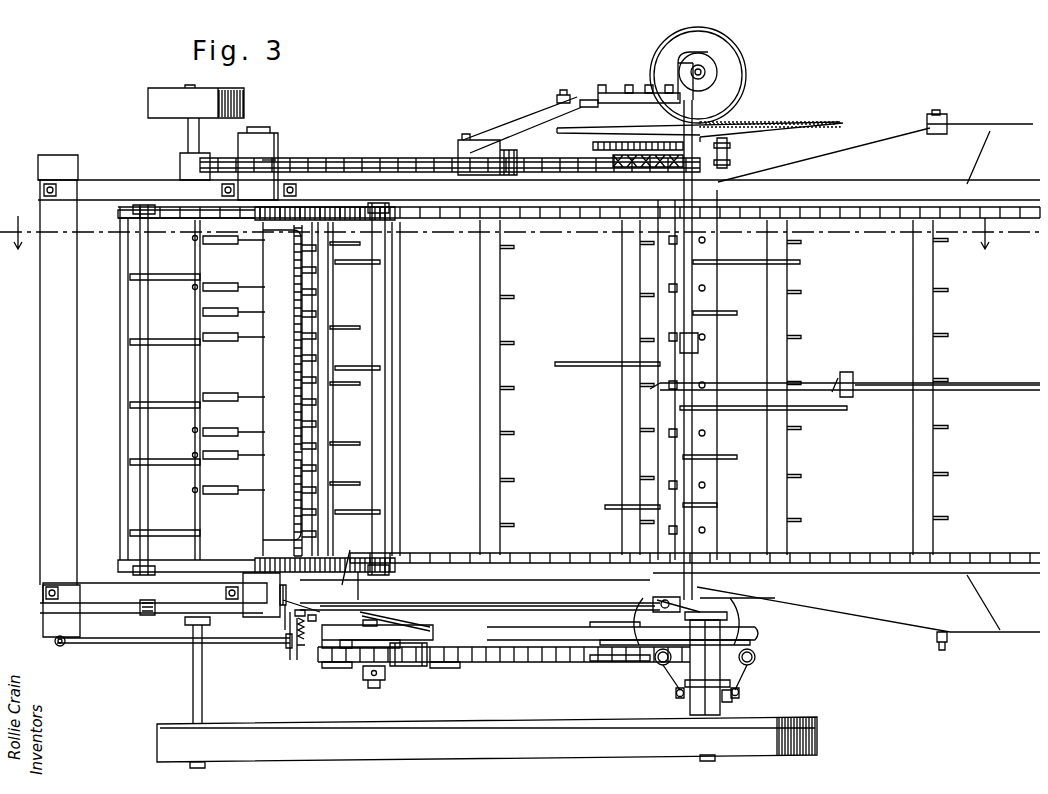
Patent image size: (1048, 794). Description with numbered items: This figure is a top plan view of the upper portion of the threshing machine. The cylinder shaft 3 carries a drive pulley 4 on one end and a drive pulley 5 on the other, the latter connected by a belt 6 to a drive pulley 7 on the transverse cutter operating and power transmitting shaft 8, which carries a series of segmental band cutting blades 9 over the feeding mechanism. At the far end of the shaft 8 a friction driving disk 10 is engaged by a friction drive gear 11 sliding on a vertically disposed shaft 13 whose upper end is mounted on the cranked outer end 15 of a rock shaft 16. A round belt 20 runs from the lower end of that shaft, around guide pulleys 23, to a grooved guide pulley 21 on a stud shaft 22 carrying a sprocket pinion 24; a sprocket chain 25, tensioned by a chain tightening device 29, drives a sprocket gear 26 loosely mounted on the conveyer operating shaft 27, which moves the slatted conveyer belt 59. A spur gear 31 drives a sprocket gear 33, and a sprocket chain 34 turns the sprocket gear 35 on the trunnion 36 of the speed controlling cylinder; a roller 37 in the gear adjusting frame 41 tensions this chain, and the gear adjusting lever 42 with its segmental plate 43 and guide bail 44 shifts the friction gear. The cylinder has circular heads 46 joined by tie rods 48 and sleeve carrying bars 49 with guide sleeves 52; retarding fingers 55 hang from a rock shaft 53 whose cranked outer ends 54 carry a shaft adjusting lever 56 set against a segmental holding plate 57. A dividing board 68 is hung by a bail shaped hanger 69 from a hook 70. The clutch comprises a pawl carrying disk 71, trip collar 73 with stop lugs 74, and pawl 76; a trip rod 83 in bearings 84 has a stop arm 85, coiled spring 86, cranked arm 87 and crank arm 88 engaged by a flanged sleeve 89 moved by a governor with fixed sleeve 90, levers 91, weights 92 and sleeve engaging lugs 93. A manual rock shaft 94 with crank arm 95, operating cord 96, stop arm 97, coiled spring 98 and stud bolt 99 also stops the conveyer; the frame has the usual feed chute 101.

The shaft 3 is at (188, 128).
The drive pulley 4 is at (148, 106).
The drive pulley 5 is at (182, 764).
The belt 6 is at (487, 740).
The drive pulley 7 is at (778, 756).
The cutter operating and power transmitting shaft 8 is at (718, 520).
The segmental band cutting blades 9 is at (798, 262).
The friction driving disk 10 is at (808, 117).
The friction drive gear 11 is at (736, 62).
The vertically disposed shaft 13 is at (704, 74).
The cranked outer end 15 is at (723, 110).
The rock shaft 16 is at (726, 162).
The round belt 20 is at (730, 147).
The grooved guide pulley 21 is at (754, 632).
The stud shaft 22 is at (700, 695).
The guide pulleys 23 is at (772, 600).
The sprocket pinion 24 is at (635, 655).
The sprocket chain 25 is at (540, 662).
The sprocket gear 26 is at (332, 660).
The conveyer operating shaft 27 is at (378, 688).
The chain tightening device 29 is at (404, 660).
The spur gear 31 is at (593, 146).
The sprocket gear 33 is at (623, 170).
The sprocket chain 34 is at (343, 160).
The sprocket gear 35 is at (268, 160).
The trunnion 36 is at (267, 131).
The roller 37 is at (486, 134).
The gear adjusting frame 41 is at (512, 118).
The gear adjusting lever 42 is at (635, 92).
The segmental plate 43 is at (612, 94).
The guide bail 44 is at (574, 96).
The circular heads 46 is at (122, 220).
The tie rods 48 is at (380, 320).
The sleeve carrying bars 49 is at (328, 404).
The guide sleeve 52 is at (210, 242).
The rock shaft 53 is at (292, 390).
The cranked outer ends 54 is at (272, 230).
The retarding fingers 55 is at (424, 370).
The shaft adjusting lever 56 is at (142, 614).
The segmental holding plate 57 is at (148, 620).
The slatted conveyer belt 59 is at (542, 220).
The dividing board 68 is at (968, 382).
The bail shaped hanger 69 is at (820, 382).
The hook 70 is at (660, 382).
The pawl carrying disk 71 is at (300, 650).
The trip collar 73 is at (355, 648).
The stop lugs 74 is at (366, 656).
The pawl 76 is at (342, 662).
The trip rod 83 is at (530, 608).
The bearings 84 is at (363, 607).
The stop arm 85 is at (410, 620).
The coiled spring 86 is at (315, 610).
The cranked arm 87 is at (357, 563).
The crank arm 88 is at (698, 600).
The flanged sleeve 89 is at (753, 655).
The fixed sleeve 90 is at (705, 715).
The levers 91 is at (748, 683).
The balls or weights 92 is at (758, 672).
The sleeve engaging lugs 93 is at (690, 710).
The rock shaft 94 is at (242, 638).
The crank arm 95 is at (300, 628).
The operating cord 96 is at (64, 646).
The stop arm 97 is at (285, 626).
The coiled spring 98 is at (292, 648).
The stud bolt 99 is at (298, 650).
The feed chute 101 is at (846, 380).